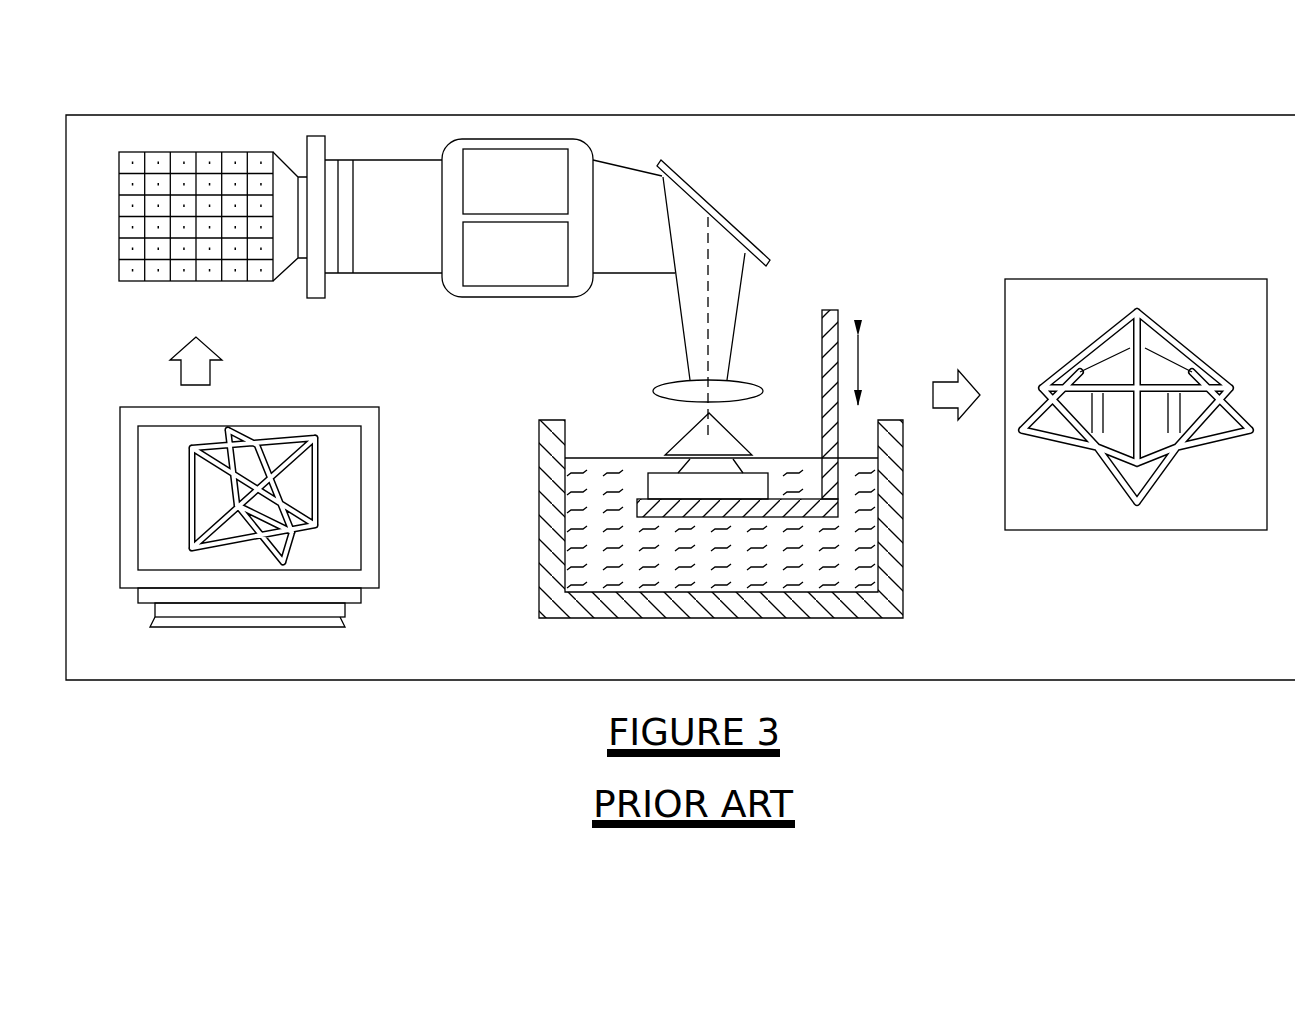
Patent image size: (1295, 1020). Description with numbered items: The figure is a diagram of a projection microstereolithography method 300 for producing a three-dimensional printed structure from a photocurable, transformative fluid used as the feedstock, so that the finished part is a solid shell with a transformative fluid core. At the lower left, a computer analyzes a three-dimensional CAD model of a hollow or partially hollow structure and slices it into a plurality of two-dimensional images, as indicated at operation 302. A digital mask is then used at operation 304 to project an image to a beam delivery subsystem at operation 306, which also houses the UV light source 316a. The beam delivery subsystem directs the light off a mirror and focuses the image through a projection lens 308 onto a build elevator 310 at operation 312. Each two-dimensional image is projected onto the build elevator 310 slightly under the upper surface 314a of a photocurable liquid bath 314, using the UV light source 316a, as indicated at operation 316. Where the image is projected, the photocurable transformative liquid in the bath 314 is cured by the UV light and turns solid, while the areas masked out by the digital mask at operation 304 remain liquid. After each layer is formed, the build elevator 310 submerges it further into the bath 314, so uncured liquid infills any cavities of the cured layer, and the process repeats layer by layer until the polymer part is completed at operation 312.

The method 300 is at (1146, 88).
The operation of analyzing and slicing the 3D CAD model 302 is at (172, 490).
The digital mask operation 304 is at (157, 140).
The beam delivery subsystem operation 306 is at (517, 208).
The projection lens 308 is at (673, 383).
The build elevator 310 is at (822, 350).
The operation of focusing the image onto the build elevator 312 is at (880, 318).
The photocurable liquid bath 314 is at (753, 532).
The upper surface of the photocurable liquid bath 314a is at (650, 458).
The operation of projecting the 2D images with UV light 316 is at (626, 192).
The UV light source 316a is at (490, 288).